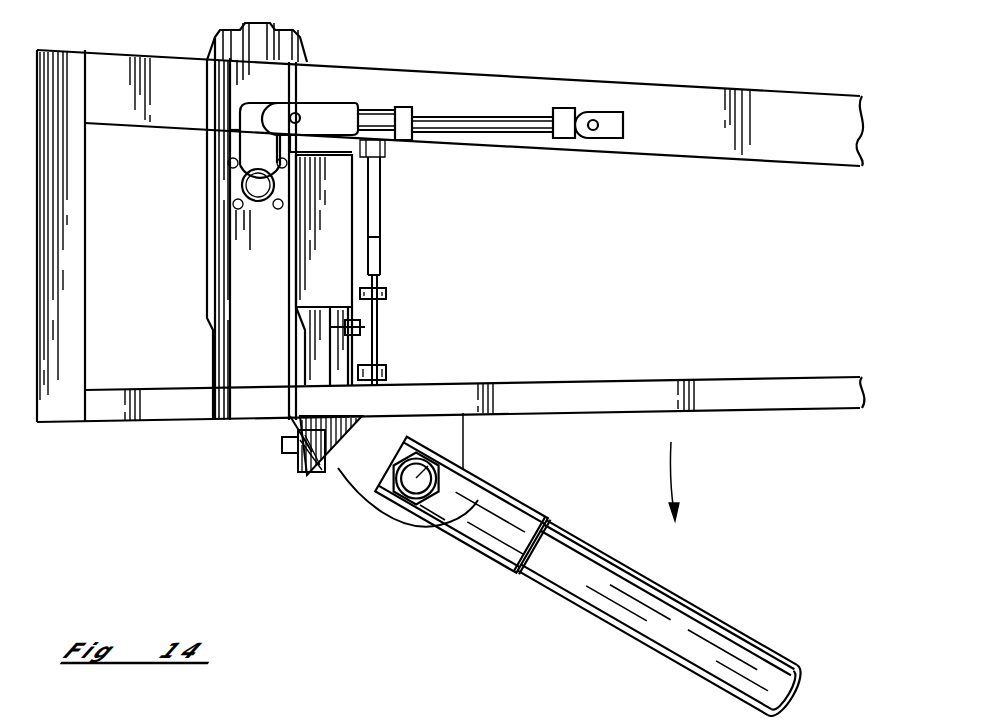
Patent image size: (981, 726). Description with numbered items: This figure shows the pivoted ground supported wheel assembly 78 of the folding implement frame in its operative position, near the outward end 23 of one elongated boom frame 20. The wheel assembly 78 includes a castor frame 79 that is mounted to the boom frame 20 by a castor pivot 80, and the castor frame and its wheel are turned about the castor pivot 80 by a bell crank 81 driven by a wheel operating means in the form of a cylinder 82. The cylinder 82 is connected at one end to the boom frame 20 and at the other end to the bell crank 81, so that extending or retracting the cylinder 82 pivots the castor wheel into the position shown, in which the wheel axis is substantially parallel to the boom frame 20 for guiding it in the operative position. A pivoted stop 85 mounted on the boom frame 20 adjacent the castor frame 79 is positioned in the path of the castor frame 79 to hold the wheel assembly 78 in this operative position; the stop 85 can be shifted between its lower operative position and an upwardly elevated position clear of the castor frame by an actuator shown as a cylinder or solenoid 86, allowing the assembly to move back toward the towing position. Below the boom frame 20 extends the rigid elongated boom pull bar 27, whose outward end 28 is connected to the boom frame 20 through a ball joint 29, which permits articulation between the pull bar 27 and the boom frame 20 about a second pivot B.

The boom frame 20 is at (603, 58).
The outward end 23 is at (182, 68).
The boom pull bar 27 is at (672, 586).
The outward end 28 is at (532, 509).
The ball joint 29 is at (393, 500).
The ground supported wheel assembly 78 is at (203, 253).
The castor frame 79 is at (347, 292).
The castor pivot 80 is at (252, 183).
The bell crank 81 is at (248, 127).
The cylinder 82 is at (493, 125).
The pivoted stop 85 is at (363, 332).
The cylinder or solenoid 86 is at (375, 228).
The second pivot B is at (463, 460).